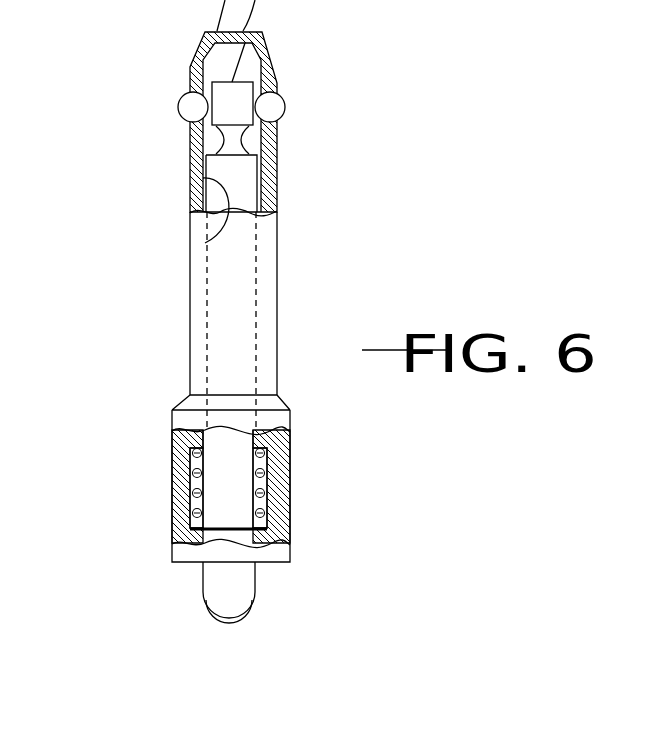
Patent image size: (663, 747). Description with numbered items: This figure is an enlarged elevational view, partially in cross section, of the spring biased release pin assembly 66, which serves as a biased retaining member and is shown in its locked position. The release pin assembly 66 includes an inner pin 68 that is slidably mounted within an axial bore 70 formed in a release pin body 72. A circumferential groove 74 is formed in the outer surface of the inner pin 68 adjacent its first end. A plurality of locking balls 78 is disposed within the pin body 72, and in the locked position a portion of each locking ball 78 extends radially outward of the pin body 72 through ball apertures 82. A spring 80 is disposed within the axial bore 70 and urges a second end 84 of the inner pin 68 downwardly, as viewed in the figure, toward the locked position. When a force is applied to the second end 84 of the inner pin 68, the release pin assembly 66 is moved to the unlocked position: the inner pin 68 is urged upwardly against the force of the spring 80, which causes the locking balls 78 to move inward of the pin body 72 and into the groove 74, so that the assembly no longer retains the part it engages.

The release pin assembly 66 is at (131, 66).
The inner pin 68 is at (237, 593).
The axial bore 70 is at (208, 240).
The release pin body 72 is at (268, 552).
The circumferential groove 74 is at (242, 140).
The locking balls 78 is at (270, 107).
The spring 80 is at (260, 470).
The ball apertures 82 is at (186, 111).
The second end 84 is at (220, 618).